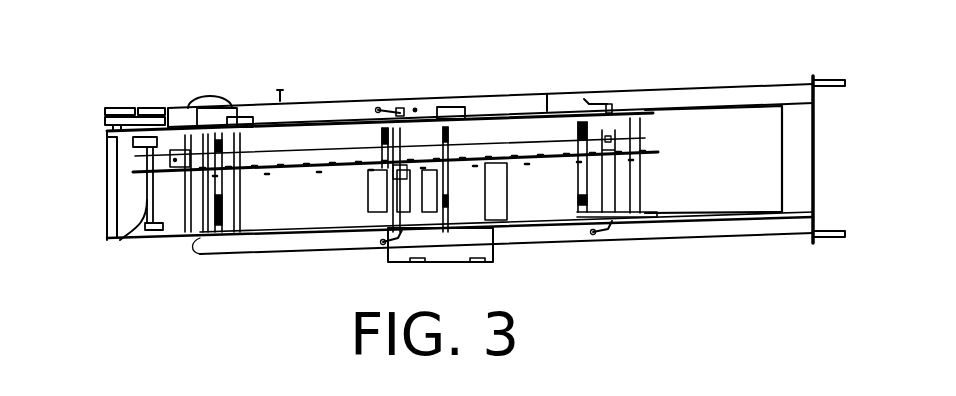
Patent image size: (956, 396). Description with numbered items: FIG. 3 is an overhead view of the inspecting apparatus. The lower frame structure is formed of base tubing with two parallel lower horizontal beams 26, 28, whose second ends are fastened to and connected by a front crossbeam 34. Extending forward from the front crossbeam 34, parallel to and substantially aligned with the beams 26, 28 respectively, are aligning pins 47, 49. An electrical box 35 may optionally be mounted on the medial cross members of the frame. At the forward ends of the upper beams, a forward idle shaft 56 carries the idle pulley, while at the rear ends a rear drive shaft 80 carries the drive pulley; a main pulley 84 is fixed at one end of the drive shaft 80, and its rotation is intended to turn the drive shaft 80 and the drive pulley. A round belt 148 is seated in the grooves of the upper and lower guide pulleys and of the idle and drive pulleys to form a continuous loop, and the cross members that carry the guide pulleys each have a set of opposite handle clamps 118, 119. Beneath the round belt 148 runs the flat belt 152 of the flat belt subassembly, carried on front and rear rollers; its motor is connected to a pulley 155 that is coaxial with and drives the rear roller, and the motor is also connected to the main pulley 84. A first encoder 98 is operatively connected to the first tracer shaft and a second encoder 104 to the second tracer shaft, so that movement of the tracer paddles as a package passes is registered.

The lower horizontal beam 26 is at (762, 228).
The lower horizontal beam 28 is at (733, 87).
The front crossbeam 34 is at (821, 141).
The electrical box 35 is at (455, 258).
The aligning pin 47 is at (838, 238).
The aligning pin 49 is at (833, 78).
The forward idle shaft 56 is at (647, 197).
The rear drive shaft 80 is at (122, 242).
The main pulley 84 is at (150, 107).
The first encoder 98 is at (237, 118).
The second encoder 104 is at (450, 106).
The handle clamp 118 is at (596, 231).
The handle clamp 119 is at (588, 102).
The round belt 148 is at (660, 170).
The flat belt 152 is at (700, 140).
The pulley 155 is at (108, 108).